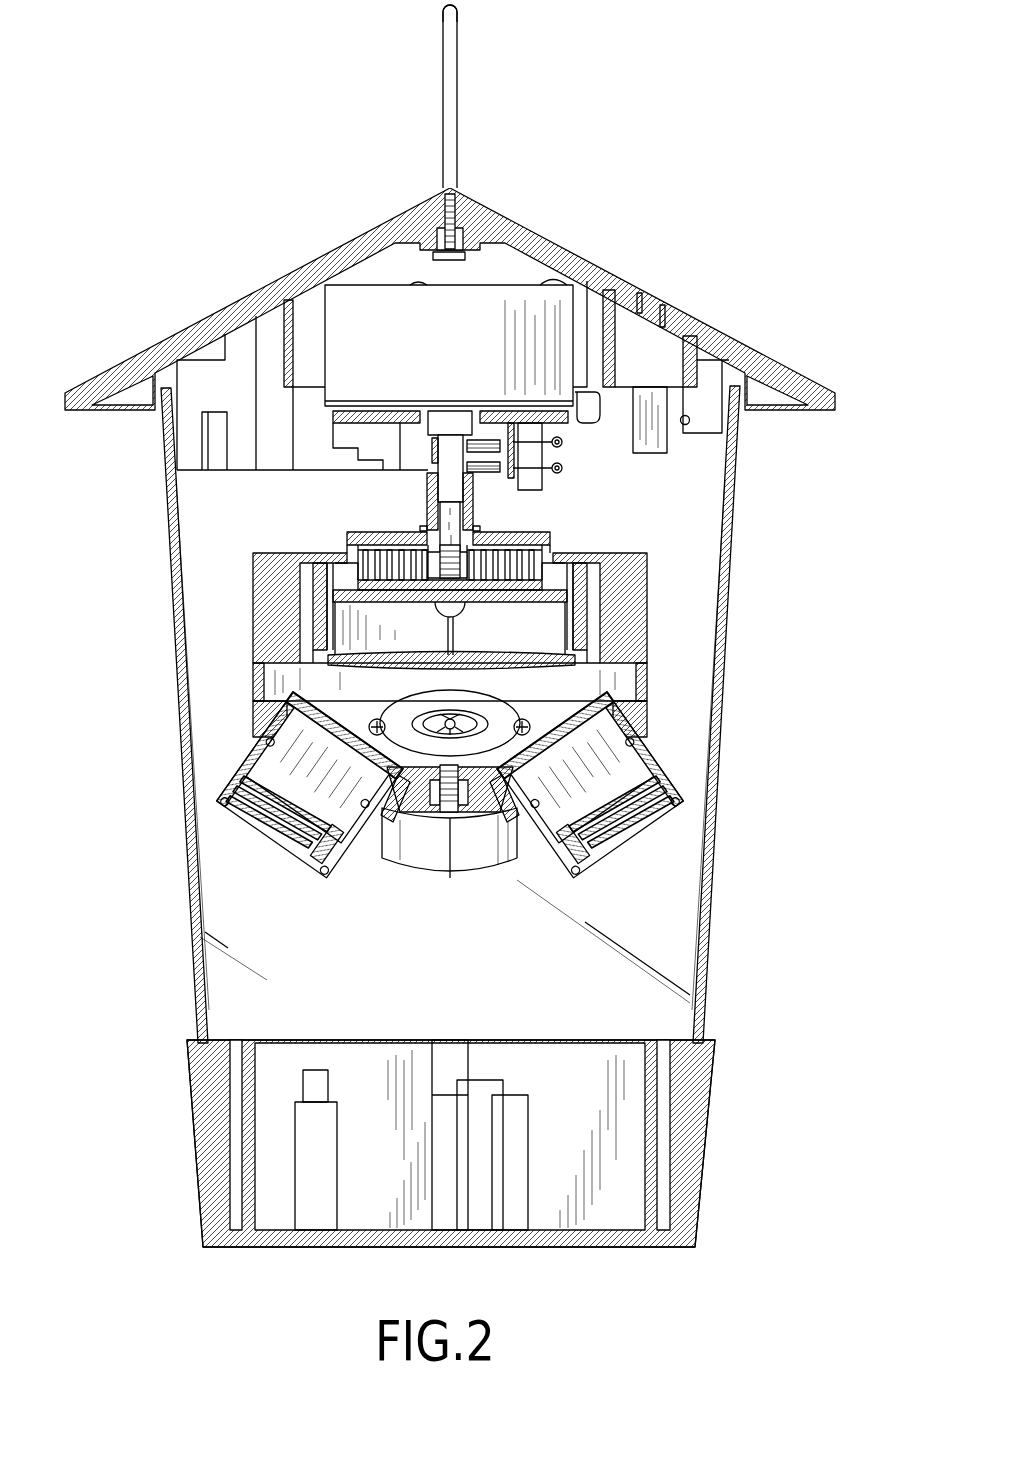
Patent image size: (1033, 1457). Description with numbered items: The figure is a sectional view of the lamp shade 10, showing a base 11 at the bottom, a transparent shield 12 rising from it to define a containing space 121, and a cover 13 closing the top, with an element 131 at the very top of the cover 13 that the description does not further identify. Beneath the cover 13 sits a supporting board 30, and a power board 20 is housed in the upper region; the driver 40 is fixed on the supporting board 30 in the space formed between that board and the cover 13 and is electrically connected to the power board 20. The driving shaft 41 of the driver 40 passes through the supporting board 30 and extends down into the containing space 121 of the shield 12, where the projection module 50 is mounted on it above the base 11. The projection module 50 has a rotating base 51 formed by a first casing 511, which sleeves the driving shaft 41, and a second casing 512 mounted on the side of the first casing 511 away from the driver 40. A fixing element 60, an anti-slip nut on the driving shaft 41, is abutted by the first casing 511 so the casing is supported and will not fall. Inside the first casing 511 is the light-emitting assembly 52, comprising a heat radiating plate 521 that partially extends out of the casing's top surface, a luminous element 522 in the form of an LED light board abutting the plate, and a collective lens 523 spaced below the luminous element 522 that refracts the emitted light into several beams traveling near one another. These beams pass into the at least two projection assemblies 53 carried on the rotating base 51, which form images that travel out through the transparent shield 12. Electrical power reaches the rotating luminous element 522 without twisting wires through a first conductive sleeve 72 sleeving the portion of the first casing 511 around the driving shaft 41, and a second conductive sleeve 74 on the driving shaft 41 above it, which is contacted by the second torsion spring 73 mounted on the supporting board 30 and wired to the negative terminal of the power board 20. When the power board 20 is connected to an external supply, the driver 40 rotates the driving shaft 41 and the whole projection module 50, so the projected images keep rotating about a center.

The lamp shade 10 is at (727, 1250).
The base 11 is at (710, 1107).
The shield 12 is at (733, 705).
The containing space 121 is at (475, 998).
The cover 13 is at (470, 128).
The rod end 131 is at (457, 48).
The power board 20 is at (312, 437).
The supporting board 30 is at (583, 417).
The driver 40 is at (465, 290).
The driving shaft 41 is at (451, 488).
The projection module 50 is at (232, 833).
The rotating base 51 is at (230, 548).
The first casing 511 is at (255, 659).
The second casing 512 is at (257, 724).
The light-emitting assembly 52 is at (577, 608).
The heat radiating plate 521 is at (373, 558).
The luminous element 522 is at (347, 595).
The collective lens 523 is at (530, 660).
The projection assemblies 53 is at (608, 843).
The fixing element 60 is at (468, 562).
The first conductive sleeve 72 is at (422, 512).
The second torsion spring 73 is at (562, 468).
The second conductive sleeve 74 is at (432, 447).